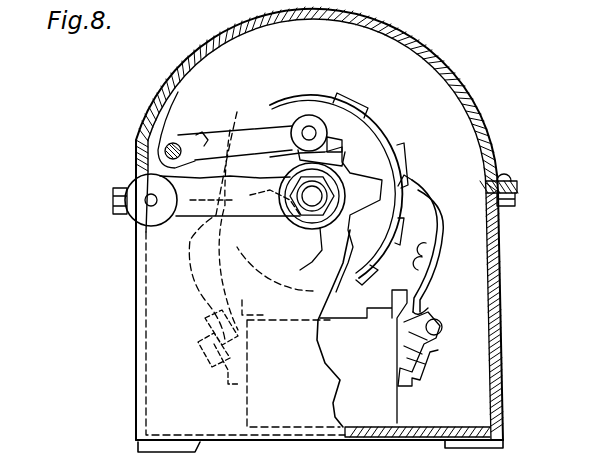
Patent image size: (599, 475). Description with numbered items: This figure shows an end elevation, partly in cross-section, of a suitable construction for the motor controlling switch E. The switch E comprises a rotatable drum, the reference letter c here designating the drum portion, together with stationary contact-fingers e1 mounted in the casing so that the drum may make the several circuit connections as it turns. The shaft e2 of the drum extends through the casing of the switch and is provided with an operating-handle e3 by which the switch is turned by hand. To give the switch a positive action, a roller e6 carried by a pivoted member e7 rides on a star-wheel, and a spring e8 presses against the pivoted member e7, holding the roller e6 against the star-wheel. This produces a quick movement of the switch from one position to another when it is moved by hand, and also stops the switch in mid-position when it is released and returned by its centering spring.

The motor controlling switch E is at (247, 186).
The brake drum ring c is at (367, 130).
The stationary contact-fingers e1 is at (430, 213).
The shaft e2 is at (313, 198).
The operating-handle e3 is at (182, 208).
The roller e6 is at (306, 118).
The pivoted member e7 is at (228, 136).
The spring e8 is at (165, 129).